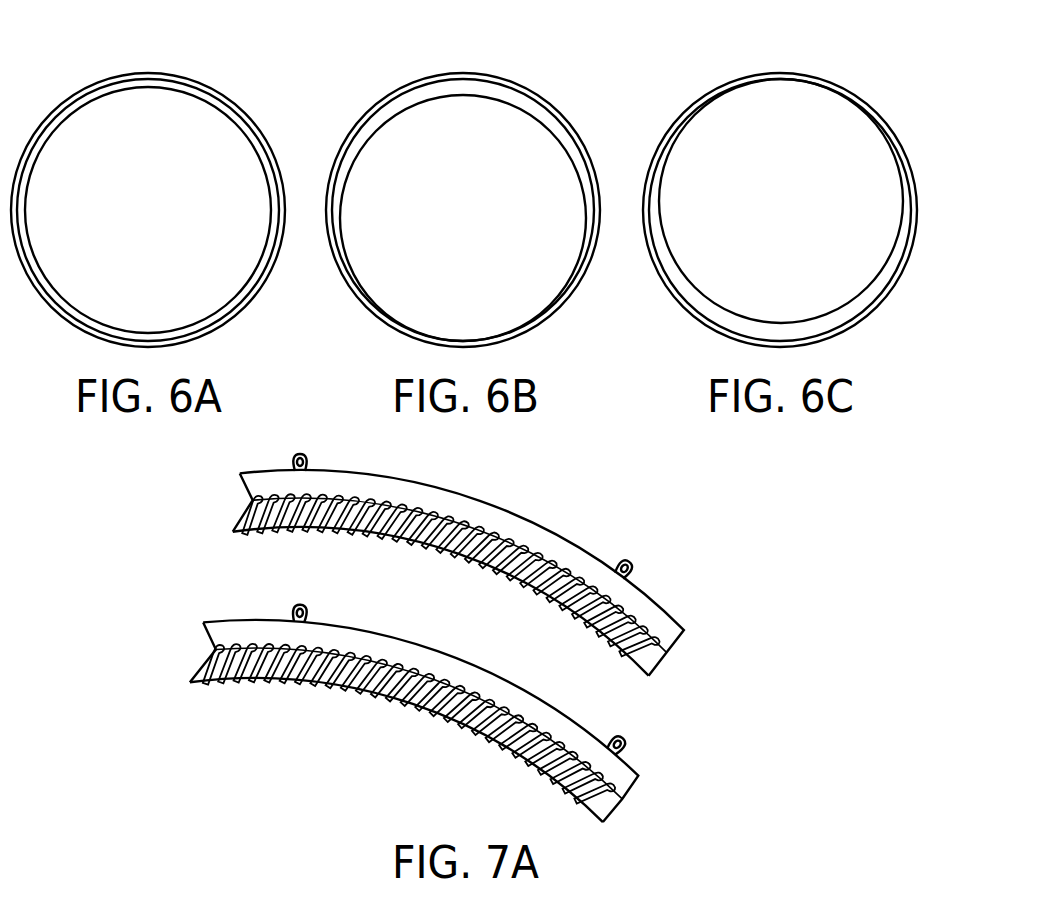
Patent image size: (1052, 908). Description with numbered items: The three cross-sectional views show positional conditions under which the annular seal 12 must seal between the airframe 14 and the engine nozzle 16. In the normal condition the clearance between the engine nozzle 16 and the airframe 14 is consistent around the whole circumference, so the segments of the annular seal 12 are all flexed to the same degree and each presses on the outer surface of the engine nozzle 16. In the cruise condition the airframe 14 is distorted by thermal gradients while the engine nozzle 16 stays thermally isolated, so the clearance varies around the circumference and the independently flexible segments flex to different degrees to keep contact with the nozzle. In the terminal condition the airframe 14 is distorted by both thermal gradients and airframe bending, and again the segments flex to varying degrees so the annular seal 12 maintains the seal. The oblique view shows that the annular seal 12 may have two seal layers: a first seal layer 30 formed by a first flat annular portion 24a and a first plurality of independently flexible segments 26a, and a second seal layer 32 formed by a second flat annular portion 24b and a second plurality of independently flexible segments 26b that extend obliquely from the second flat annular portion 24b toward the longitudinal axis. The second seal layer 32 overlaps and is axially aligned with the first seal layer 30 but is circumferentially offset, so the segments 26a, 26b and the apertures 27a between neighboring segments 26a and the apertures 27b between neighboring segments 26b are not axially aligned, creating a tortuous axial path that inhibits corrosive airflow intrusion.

In FIG. 7A, the annular seal 12 is at (603, 530).
In FIG. 6A, the airframe 14 is at (215, 88).
In FIG. 6B, the airframe 14 is at (533, 90).
In FIG. 6C, the airframe 14 is at (892, 288).
In FIG. 6A, the engine nozzle 16 is at (107, 90).
In FIG. 6B, the engine nozzle 16 is at (423, 100).
In FIG. 6C, the engine nozzle 16 is at (853, 300).
In FIG. 7A, the first flat annular portion 24a is at (625, 785).
In FIG. 7A, the second flat annular portion 24b is at (667, 623).
In FIG. 7A, the first plurality of independently flexible segments 26a is at (605, 813).
In FIG. 7A, the second plurality of independently flexible segments 26b is at (657, 660).
In FIG. 7A, the apertures 27a is at (423, 723).
In FIG. 7A, the apertures 27b is at (463, 565).
In FIG. 7A, the first seal layer 30 is at (754, 759).
In FIG. 7A, the second seal layer 32 is at (791, 596).